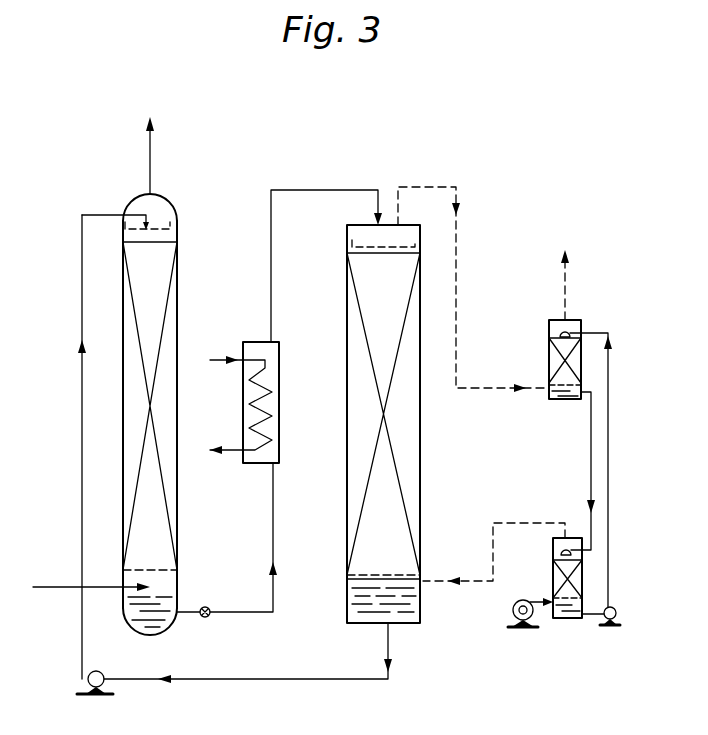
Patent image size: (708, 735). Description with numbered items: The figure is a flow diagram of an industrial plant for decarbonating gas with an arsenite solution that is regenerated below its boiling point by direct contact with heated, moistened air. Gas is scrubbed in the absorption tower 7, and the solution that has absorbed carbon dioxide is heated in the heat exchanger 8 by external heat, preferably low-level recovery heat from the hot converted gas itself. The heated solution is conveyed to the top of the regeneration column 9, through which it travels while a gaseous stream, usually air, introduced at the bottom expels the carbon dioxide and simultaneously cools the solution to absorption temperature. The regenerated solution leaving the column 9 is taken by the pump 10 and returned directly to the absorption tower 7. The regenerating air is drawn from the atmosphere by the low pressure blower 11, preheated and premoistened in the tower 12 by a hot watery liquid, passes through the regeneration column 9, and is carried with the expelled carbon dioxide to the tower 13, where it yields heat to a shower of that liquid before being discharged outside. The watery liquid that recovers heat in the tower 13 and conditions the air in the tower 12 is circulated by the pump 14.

The absorption tower 7 is at (123, 361).
The heat exchanger 8 is at (248, 342).
The regeneration column 9 is at (347, 321).
The pump 10 is at (89, 679).
The low pressure blower 11 is at (513, 612).
The tower 12 is at (553, 581).
The tower 13 is at (549, 351).
The pump 14 is at (617, 612).